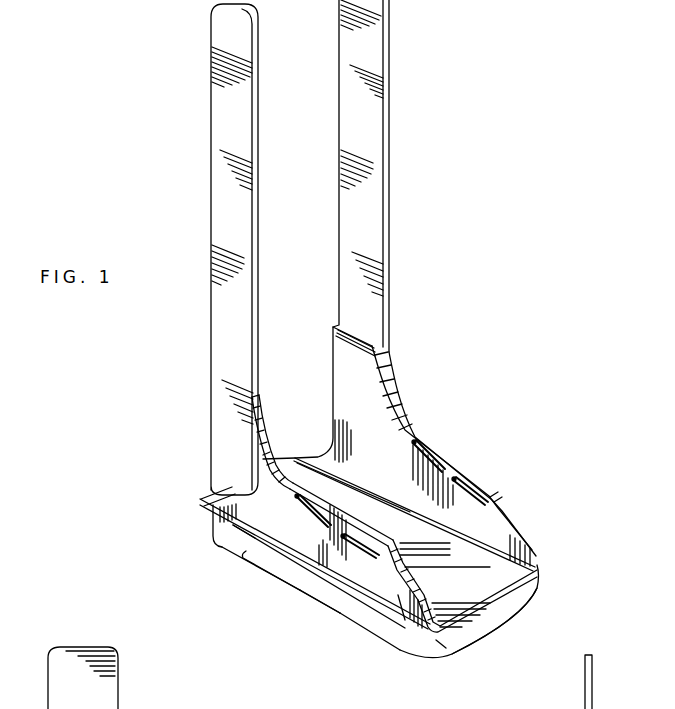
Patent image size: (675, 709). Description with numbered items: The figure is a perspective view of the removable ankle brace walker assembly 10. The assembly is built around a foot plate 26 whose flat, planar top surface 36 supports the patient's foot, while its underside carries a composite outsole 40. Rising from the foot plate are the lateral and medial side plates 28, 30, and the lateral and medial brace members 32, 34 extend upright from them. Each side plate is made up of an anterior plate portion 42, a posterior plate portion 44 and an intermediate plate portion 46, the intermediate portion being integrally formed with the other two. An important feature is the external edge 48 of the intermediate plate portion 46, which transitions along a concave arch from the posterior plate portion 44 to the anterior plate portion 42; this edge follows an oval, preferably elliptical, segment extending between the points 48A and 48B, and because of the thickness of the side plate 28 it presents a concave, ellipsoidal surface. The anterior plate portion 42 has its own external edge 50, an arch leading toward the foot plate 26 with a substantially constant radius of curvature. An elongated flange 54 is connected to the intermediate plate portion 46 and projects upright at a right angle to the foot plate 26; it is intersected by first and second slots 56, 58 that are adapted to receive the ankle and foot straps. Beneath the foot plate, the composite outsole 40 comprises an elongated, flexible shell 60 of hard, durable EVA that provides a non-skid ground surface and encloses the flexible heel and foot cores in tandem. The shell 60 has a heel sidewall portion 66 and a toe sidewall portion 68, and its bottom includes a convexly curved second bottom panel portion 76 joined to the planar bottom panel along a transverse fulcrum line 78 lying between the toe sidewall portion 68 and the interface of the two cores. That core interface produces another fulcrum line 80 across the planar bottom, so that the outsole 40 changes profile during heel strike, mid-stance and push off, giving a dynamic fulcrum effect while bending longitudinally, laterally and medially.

The ankle brace assembly 10 is at (493, 68).
The foot plate 26 is at (476, 630).
The lateral side plate 28 is at (272, 516).
The medial side plate 30 is at (392, 458).
The lateral brace member 32 is at (238, 330).
The medial brace member 34 is at (388, 196).
The top surface 36 is at (463, 557).
The composite outsole 40 is at (315, 585).
The anterior plate portion 42 is at (397, 597).
The posterior plate portion 44 is at (205, 499).
The intermediate plate portion 46 is at (293, 582).
The external edge 48 is at (394, 496).
The end point of elliptical edge 48A is at (257, 397).
The end point of elliptical edge 48B is at (424, 590).
The external edge of anterior plate portion 50 is at (399, 597).
The elongated flange 54 is at (352, 520).
The first slot 56 is at (316, 512).
The second slot 58 is at (345, 550).
The flexible shell 60 is at (253, 552).
The heel sidewall portion 66 is at (210, 528).
The toe sidewall portion 68 is at (496, 630).
The second bottom panel portion 76 is at (441, 645).
The fulcrum line 78 is at (352, 598).
The fulcrum line 80 is at (307, 597).